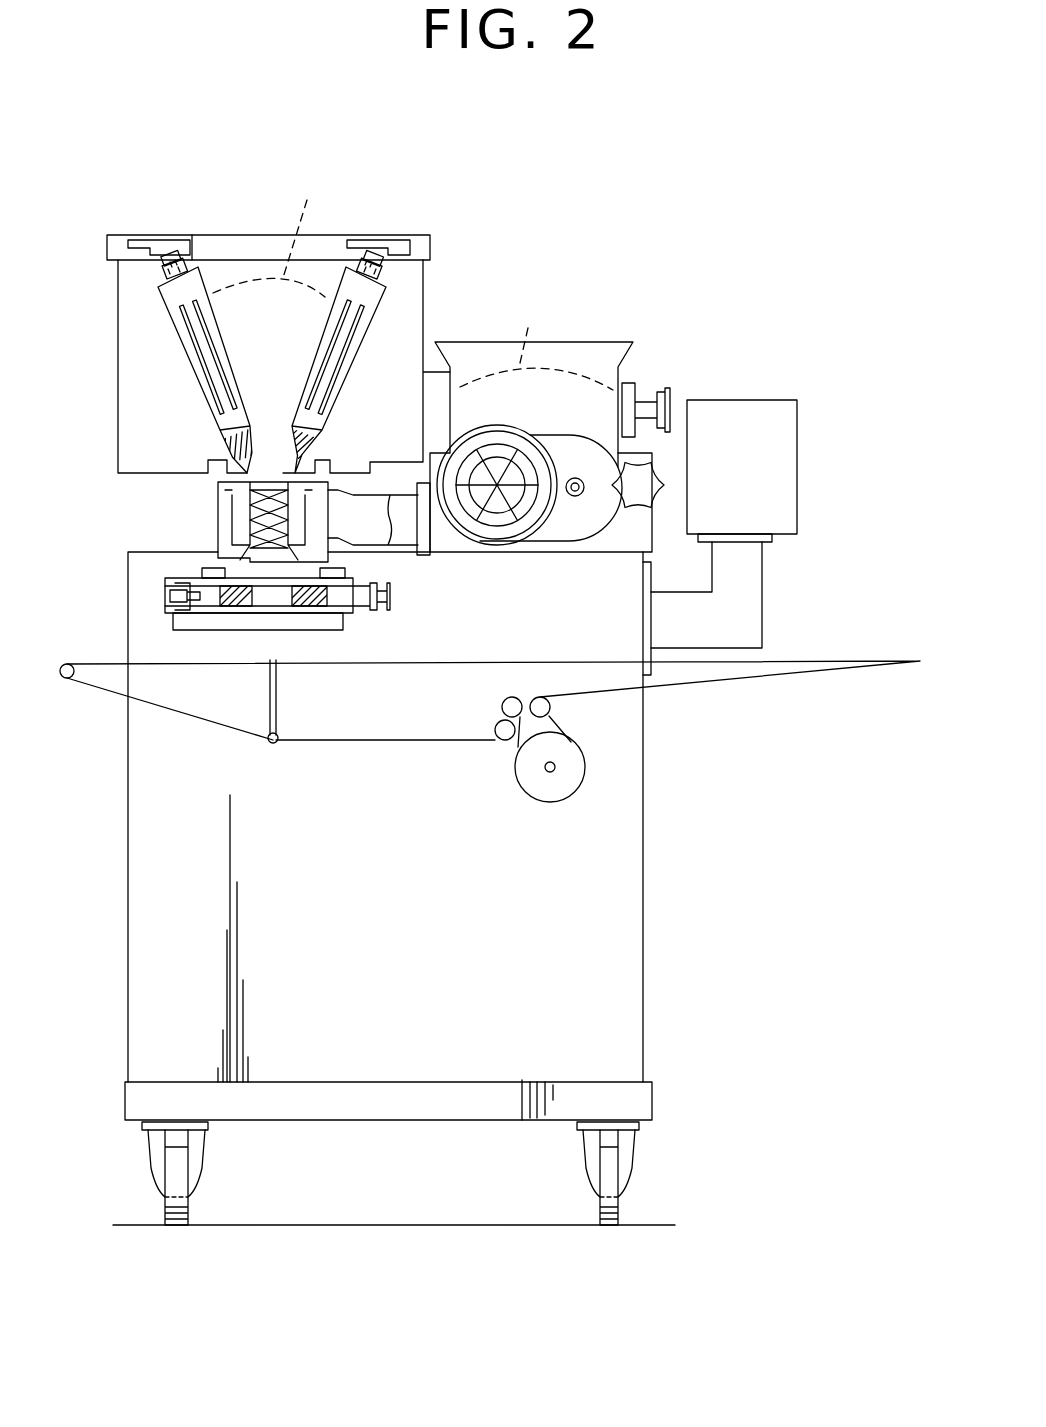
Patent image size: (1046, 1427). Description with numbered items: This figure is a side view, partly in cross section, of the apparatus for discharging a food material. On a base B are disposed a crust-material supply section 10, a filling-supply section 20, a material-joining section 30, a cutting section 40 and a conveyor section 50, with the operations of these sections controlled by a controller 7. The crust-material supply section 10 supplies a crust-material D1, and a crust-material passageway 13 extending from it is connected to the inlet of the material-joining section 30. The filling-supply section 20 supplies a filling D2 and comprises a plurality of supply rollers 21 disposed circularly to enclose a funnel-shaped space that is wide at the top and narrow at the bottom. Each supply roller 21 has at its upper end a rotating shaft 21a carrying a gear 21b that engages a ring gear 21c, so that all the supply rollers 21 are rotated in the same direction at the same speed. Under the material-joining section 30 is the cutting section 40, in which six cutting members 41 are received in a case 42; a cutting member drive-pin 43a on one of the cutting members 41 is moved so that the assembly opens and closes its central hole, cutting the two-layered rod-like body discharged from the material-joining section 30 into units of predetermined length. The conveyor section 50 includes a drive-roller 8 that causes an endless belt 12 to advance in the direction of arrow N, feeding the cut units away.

The controller 7 is at (797, 430).
The drive-roller 8 is at (567, 783).
The crust-material supply section 10 is at (645, 393).
The endless belt 12 is at (482, 445).
The crust-material passageway 13 is at (403, 545).
The filling-supply section 20 is at (118, 450).
The supply roller 21 is at (180, 345).
The rotating shaft 21a is at (173, 252).
The gear 21b is at (167, 270).
The ring gear 21c is at (192, 245).
The material-joining section 30 is at (218, 518).
The cutting section 40 is at (150, 590).
The cutting member 41 is at (320, 618).
The case 42 is at (230, 617).
The cutting member drive-pin 43a is at (200, 610).
The conveyor section 50 is at (848, 660).
The base B is at (643, 852).
The arrow indicating belt direction N is at (455, 647).
The crust-material D1 is at (536, 344).
The filling D2 is at (272, 230).